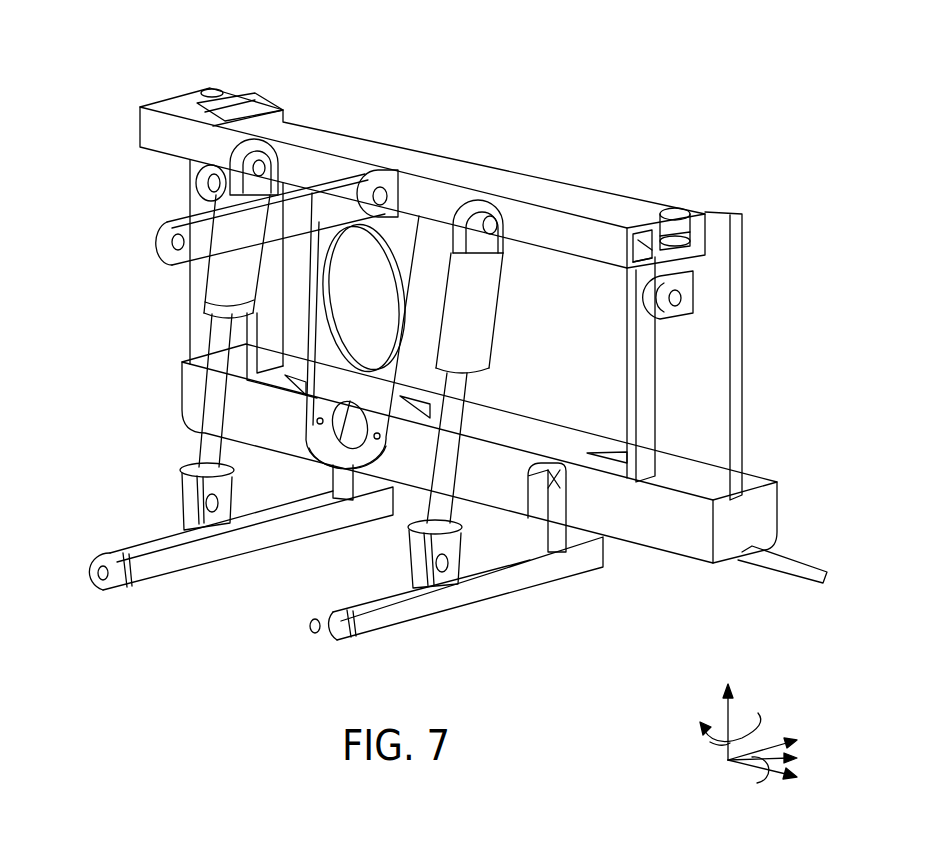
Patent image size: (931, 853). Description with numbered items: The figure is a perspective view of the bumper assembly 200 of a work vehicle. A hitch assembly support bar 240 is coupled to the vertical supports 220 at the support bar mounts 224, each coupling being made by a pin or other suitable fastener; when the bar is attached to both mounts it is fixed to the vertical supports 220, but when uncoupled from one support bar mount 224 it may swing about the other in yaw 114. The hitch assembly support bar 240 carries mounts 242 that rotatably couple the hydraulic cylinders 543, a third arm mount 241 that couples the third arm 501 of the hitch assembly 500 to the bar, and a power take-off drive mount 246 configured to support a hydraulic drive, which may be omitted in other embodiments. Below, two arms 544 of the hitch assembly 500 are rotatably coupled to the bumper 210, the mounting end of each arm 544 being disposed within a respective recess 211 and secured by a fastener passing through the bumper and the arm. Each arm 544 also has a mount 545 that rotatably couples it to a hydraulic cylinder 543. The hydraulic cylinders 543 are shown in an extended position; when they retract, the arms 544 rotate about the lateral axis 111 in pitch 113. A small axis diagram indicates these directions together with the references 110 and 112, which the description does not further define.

The bumper assembly 200 is at (174, 30).
The hitch assembly support bar 240 is at (571, 200).
The support bar mount 224 is at (700, 238).
The vertical support 220 is at (710, 358).
The bumper 210 is at (667, 538).
The recess 211 is at (556, 492).
The power take-off drive mount 246 is at (321, 343).
The hitch assembly 500 is at (66, 535).
The third arm 501 is at (290, 213).
The third arm mount 241 is at (390, 172).
The mount 242 is at (480, 205).
The hydraulic cylinder 543 is at (215, 293).
The mount 545 is at (443, 580).
The arm 544 is at (233, 560).
The rotation direction about vertical axis 110 is at (728, 716).
The lateral axis 111 is at (733, 758).
The vertical axis 112 is at (768, 743).
The pitch 113 is at (750, 772).
The yaw 114 is at (710, 742).